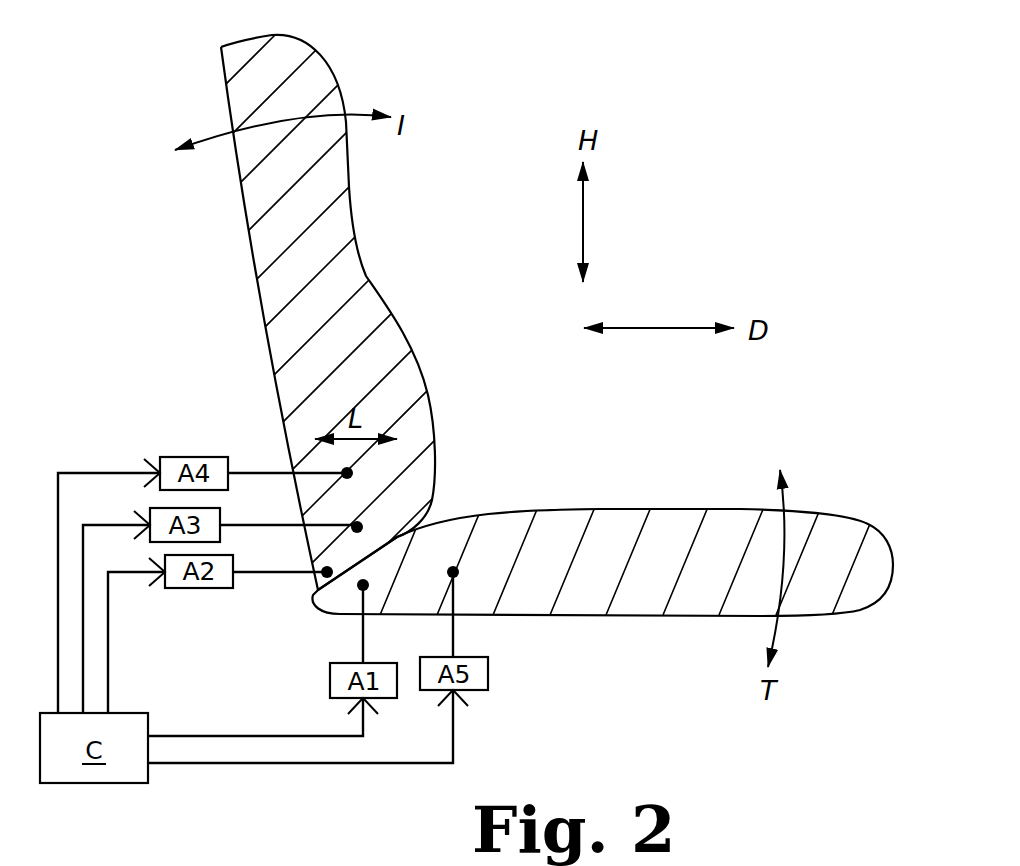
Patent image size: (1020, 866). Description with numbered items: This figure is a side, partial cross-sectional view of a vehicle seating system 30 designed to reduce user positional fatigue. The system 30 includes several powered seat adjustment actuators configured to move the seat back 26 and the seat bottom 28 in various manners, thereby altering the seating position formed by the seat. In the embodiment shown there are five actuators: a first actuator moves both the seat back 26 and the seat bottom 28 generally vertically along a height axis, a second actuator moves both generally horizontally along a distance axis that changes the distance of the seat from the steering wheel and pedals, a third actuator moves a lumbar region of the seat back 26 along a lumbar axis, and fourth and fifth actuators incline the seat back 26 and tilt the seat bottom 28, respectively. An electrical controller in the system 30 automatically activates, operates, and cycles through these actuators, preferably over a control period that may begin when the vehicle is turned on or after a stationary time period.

The seat back 26 is at (222, 69).
The seat bottom 28 is at (857, 611).
The vehicle seating system 30 is at (764, 106).